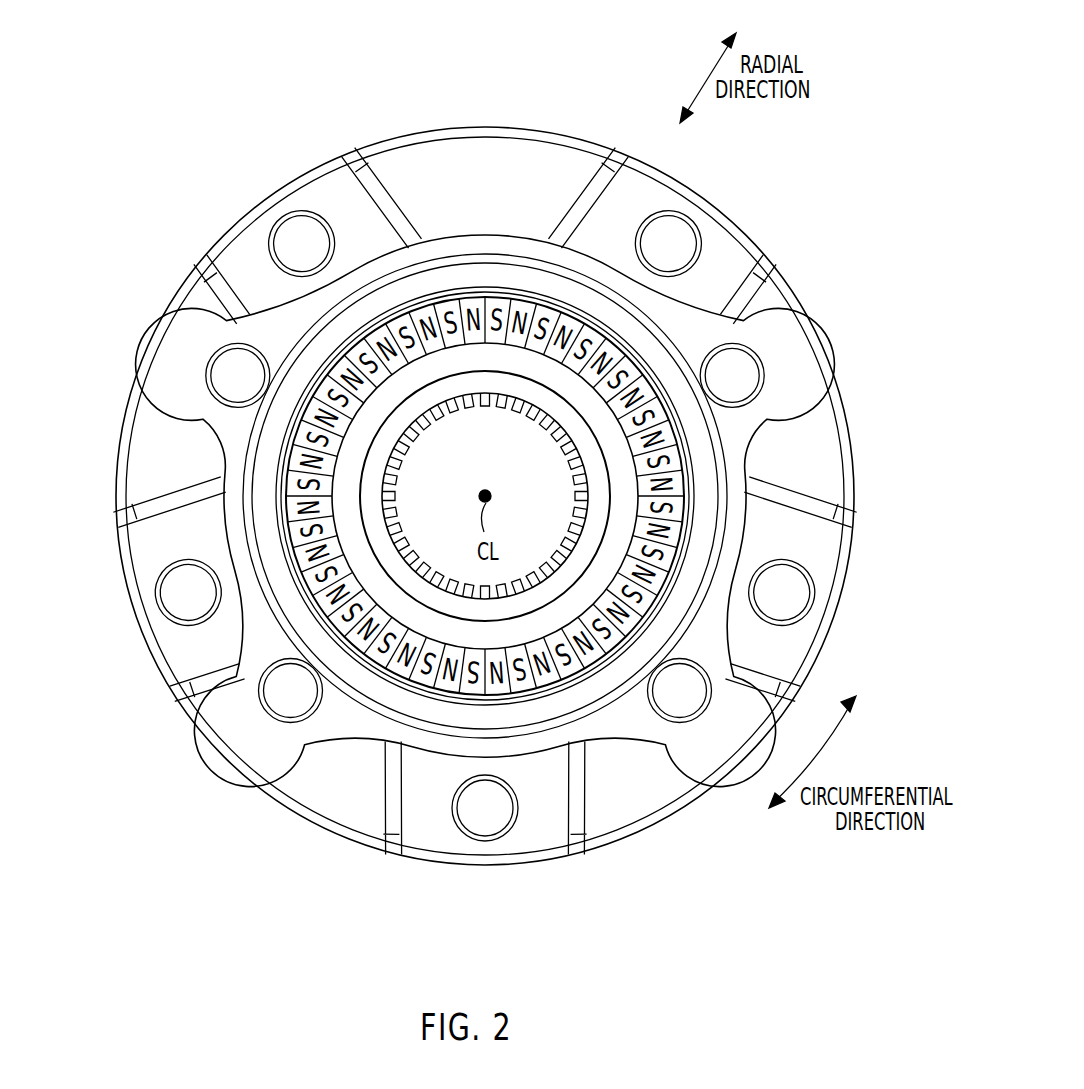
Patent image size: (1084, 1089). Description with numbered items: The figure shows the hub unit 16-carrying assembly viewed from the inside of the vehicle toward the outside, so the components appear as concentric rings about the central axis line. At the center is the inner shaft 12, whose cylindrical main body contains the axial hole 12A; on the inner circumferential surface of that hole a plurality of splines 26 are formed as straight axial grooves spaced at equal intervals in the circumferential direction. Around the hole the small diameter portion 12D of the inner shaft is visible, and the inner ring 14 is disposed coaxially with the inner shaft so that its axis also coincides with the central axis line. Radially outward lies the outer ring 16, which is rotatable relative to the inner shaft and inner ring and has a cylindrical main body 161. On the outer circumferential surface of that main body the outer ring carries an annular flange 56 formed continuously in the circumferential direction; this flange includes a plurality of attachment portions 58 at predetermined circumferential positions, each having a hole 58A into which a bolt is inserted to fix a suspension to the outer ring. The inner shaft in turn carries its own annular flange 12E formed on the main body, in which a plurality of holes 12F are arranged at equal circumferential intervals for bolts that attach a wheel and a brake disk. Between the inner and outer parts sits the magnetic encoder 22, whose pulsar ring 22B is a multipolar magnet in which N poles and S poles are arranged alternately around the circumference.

The inner shaft 12 is at (352, 537).
The hole 12A is at (405, 450).
The small diameter portion 12D is at (373, 458).
The flange 12E is at (543, 840).
The holes 12F is at (300, 228).
The inner ring 14 is at (347, 440).
The outer ring 16 is at (640, 745).
The magnetic encoder 22 is at (510, 295).
The pulsar ring 22B is at (651, 374).
The splines 26 is at (415, 440).
The flange 56 is at (423, 737).
The attachment portions 58 is at (757, 333).
The hole 58A is at (748, 396).
The main body 161 is at (376, 690).